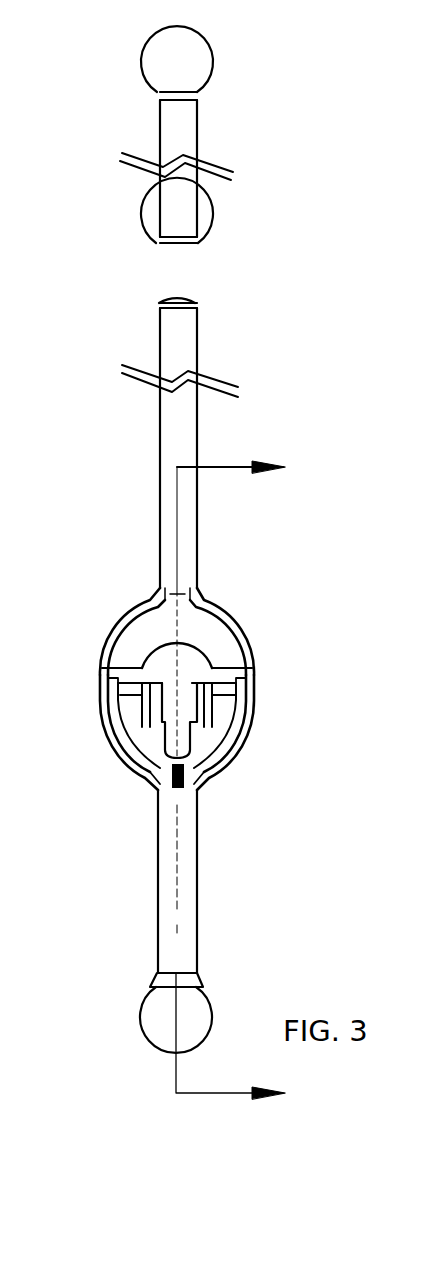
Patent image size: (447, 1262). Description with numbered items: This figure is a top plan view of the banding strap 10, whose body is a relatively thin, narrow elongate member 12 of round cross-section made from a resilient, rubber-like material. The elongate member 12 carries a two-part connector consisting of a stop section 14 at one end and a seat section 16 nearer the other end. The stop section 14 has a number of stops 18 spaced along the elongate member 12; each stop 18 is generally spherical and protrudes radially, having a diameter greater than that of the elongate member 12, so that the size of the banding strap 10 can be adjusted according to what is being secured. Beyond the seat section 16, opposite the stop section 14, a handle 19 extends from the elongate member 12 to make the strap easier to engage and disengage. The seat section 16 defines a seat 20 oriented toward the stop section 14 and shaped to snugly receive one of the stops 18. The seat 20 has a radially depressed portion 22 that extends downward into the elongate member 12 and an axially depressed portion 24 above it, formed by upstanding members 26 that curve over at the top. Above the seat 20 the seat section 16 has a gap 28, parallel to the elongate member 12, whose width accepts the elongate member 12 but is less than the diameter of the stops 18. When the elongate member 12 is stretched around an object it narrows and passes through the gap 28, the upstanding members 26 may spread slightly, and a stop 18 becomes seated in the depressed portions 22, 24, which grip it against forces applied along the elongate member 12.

The banding strap 10 is at (322, 131).
The elongate member 12 is at (198, 493).
The stop section 14 is at (95, 182).
The seat section 16 is at (306, 648).
The stop 18 is at (215, 62).
The handle 19 is at (158, 957).
The seat 20 is at (107, 635).
The radially depressed portion 22 is at (182, 673).
The axially depressed portion 24 is at (165, 685).
The upstanding members 26 is at (133, 703).
The gap 28 is at (180, 695).